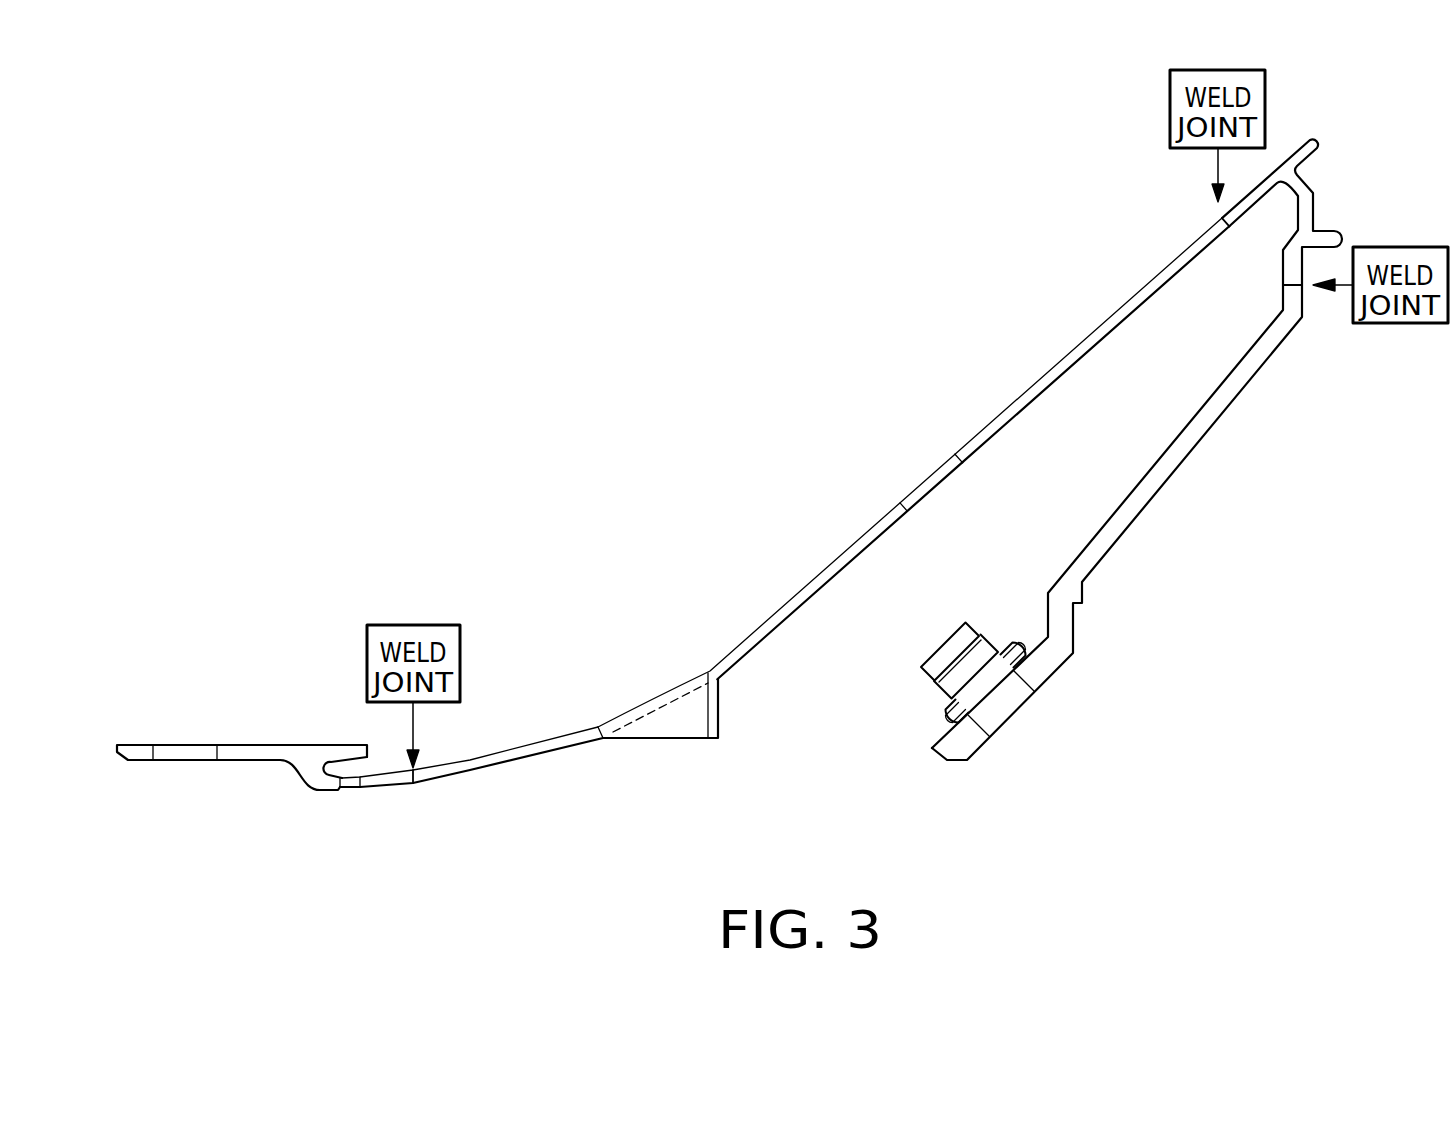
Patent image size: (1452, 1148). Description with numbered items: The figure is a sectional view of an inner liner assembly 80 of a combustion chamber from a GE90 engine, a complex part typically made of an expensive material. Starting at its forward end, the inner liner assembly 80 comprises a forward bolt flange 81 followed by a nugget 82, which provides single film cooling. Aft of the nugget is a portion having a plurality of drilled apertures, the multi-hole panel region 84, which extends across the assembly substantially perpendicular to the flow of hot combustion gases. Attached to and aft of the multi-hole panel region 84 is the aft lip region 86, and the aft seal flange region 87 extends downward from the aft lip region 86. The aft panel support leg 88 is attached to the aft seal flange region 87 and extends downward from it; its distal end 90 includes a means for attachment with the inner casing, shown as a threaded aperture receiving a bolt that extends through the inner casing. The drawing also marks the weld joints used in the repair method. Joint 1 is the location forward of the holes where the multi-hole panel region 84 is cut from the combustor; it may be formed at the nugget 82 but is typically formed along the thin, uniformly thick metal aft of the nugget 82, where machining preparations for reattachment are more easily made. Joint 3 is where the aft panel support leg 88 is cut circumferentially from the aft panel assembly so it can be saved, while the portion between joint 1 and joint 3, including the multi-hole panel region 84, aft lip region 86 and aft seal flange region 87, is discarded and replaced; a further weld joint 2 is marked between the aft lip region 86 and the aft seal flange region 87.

The joint 1 is at (415, 762).
The weld joint 2 is at (1222, 218).
The joint 3 is at (1298, 288).
The inner liner assembly 80 is at (502, 774).
The forward bolt flange 81 is at (140, 762).
The nugget 82 is at (330, 791).
The multi-hole panel region 84 is at (750, 651).
The aft lip region 86 is at (1140, 285).
The aft seal flange region 87 is at (1315, 213).
The aft panel support leg 88 is at (1165, 483).
The distal end 90 is at (1067, 657).